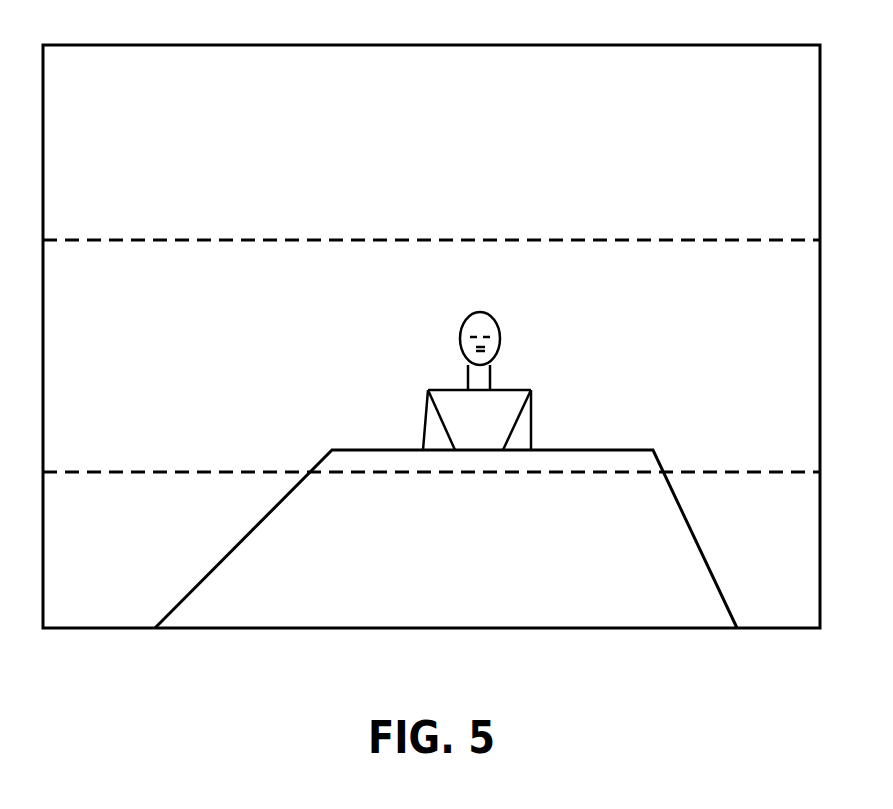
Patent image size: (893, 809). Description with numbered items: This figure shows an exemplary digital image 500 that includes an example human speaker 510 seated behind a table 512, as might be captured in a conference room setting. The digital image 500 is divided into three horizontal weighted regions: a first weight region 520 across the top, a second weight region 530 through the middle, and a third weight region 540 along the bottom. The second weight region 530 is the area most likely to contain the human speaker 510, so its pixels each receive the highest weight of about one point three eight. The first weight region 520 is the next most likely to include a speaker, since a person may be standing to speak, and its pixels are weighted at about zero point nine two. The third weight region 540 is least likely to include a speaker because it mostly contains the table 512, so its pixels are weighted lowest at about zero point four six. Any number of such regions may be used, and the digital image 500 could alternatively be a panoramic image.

The digital image 500 is at (490, 44).
The human speaker 510 is at (521, 412).
The table 512 is at (247, 538).
The first weight region 520 is at (310, 92).
The second weight region 530 is at (338, 286).
The third weight region 540 is at (192, 530).